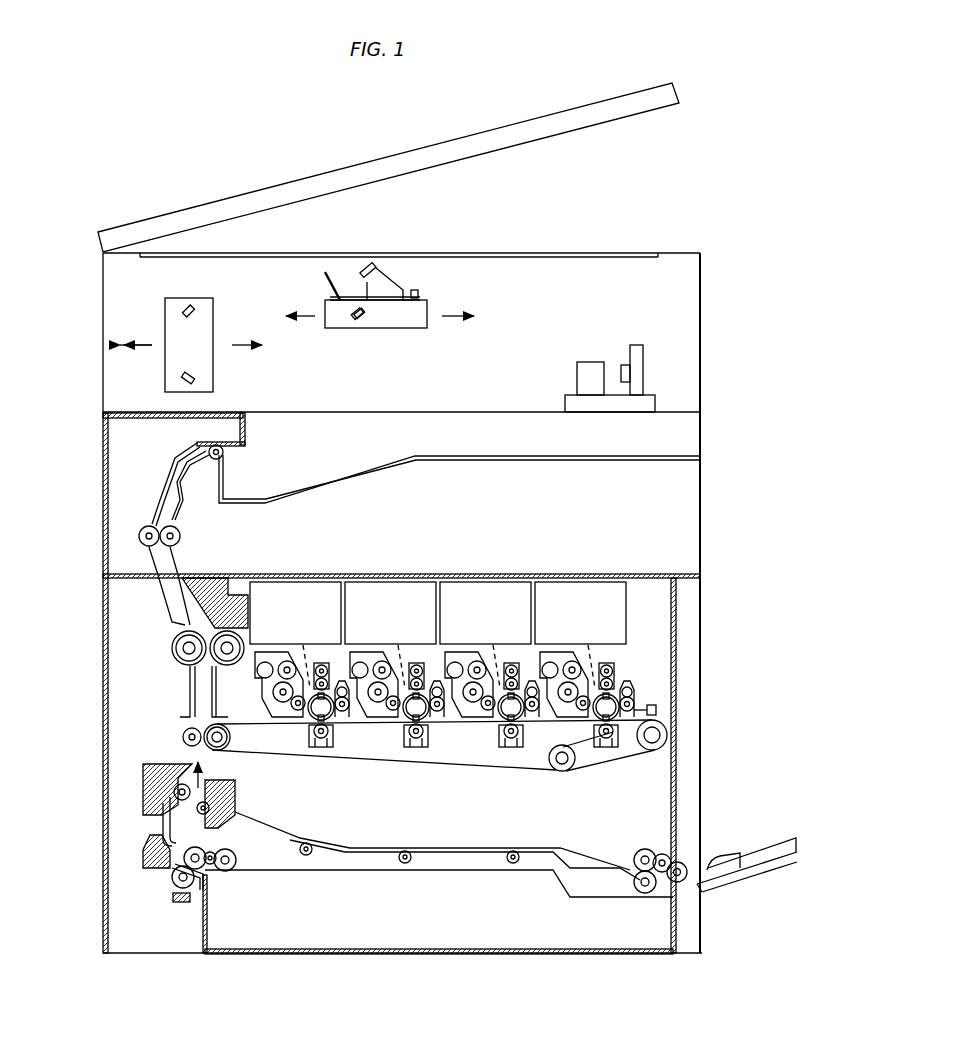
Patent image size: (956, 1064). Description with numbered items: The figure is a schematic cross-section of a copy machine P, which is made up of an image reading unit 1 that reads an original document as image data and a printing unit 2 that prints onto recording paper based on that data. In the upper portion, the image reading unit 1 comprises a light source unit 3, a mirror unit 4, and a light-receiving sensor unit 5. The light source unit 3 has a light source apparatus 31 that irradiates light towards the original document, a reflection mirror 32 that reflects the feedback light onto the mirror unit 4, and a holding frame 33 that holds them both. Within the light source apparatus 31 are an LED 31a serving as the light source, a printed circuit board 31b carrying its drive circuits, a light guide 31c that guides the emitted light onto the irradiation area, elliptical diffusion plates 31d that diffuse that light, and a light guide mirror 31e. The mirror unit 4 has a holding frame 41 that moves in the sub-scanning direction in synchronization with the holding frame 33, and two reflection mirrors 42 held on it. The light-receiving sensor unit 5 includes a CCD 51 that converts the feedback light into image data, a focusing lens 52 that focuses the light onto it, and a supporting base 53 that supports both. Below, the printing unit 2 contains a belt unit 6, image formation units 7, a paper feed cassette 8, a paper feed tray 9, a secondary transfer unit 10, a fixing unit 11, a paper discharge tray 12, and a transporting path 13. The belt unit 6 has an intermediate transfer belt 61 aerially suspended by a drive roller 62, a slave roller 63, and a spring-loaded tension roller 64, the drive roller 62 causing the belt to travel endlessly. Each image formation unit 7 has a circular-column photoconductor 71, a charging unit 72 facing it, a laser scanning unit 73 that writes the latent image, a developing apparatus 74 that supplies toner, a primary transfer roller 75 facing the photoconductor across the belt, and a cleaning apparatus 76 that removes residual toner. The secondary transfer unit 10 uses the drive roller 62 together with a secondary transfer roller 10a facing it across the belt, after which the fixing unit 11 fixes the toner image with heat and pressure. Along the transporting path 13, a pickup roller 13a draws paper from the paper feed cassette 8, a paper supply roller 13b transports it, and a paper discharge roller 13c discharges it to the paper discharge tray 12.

The image reading unit 1 is at (117, 331).
The copy machine P is at (150, 220).
The printing unit 2 is at (744, 477).
The light source unit 3 is at (394, 286).
The mirror unit 4 is at (168, 333).
The light-receiving sensor unit 5 is at (665, 361).
The belt unit 6 is at (493, 775).
The image formation unit 7 is at (504, 713).
The paper feed cassette 8 is at (350, 940).
The paper feed tray 9 is at (740, 855).
The secondary transfer unit 10 is at (173, 759).
The secondary transfer roller 10a is at (186, 742).
The fixing unit 11 is at (164, 640).
The paper discharge tray 12 is at (287, 493).
The transporting path 13 is at (200, 838).
The pickup roller 13a is at (236, 871).
The paper supply roller 13b is at (214, 848).
The paper discharge roller 13c is at (216, 461).
The light source apparatus 31 is at (394, 286).
The LED 31a is at (414, 289).
The printed circuit board 31b is at (395, 308).
The light guide 31c is at (388, 274).
The elliptical diffusion plate 31d is at (364, 270).
The light guide mirror 31e is at (328, 297).
The reflection mirror 32 is at (358, 322).
The holding frame 33 is at (415, 322).
The holding frame 41 is at (213, 303).
The reflection mirror 42 is at (194, 313).
The CCD 51 is at (624, 366).
The focusing lens 52 is at (592, 364).
The supporting base 53 is at (617, 405).
The intermediate transfer belt 61 is at (455, 768).
The drive roller 62 is at (228, 746).
The slave roller 63 is at (668, 735).
The tension roller 64 is at (560, 753).
The photoconductor 71 is at (672, 685).
The charging unit 72 is at (671, 656).
The laser scanning unit 73 is at (295, 582).
The developing apparatus 74 is at (635, 656).
The primary transfer roller 75 is at (641, 757).
The cleaning apparatus 76 is at (687, 697).